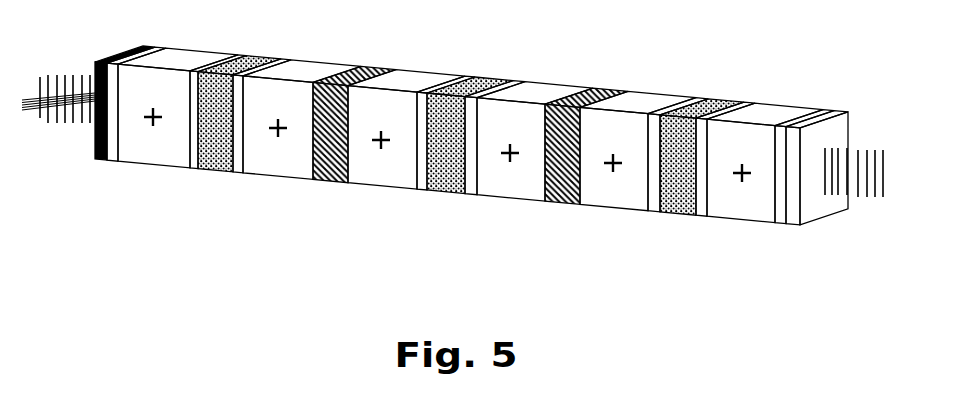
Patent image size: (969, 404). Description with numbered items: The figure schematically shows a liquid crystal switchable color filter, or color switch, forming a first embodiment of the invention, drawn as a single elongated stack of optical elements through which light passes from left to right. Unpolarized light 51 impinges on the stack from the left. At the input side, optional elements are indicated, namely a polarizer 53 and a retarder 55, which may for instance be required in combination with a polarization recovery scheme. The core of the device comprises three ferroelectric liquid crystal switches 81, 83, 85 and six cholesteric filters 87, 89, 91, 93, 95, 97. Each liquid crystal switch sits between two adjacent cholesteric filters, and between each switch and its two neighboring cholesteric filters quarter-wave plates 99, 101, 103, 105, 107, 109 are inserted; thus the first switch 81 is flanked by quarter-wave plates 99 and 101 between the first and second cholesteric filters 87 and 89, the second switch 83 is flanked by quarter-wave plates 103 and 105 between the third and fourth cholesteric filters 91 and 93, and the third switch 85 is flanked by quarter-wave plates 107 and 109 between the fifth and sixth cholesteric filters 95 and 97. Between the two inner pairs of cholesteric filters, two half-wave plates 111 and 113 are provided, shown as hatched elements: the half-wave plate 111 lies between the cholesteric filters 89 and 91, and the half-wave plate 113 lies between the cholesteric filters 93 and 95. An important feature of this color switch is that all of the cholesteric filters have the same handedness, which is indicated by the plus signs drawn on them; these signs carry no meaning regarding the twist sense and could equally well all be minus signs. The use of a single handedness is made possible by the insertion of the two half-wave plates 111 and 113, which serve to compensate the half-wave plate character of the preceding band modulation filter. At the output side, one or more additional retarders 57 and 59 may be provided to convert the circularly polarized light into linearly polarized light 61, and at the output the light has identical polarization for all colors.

The unpolarized light 51 is at (58, 111).
The polarizer 53 is at (102, 161).
The retarder 55 is at (113, 162).
The retarder 57 is at (782, 229).
The retarder 59 is at (790, 227).
The linearly polarized light 61 is at (856, 189).
The ferroelectric liquid crystal switch 81 is at (223, 173).
The ferroelectric liquid crystal switch 83 is at (452, 193).
The ferroelectric liquid crystal switch 85 is at (682, 219).
The cholesteric filter 87 is at (160, 165).
The cholesteric filter 89 is at (285, 181).
The cholesteric filter 91 is at (388, 189).
The cholesteric filter 93 is at (515, 199).
The cholesteric filter 95 is at (613, 209).
The cholesteric filter 97 is at (748, 223).
The quarter-wave plate 99 is at (193, 170).
The quarter-wave plate 101 is at (238, 175).
The quarter-wave plate 103 is at (426, 190).
The quarter-wave plate 105 is at (470, 195).
The quarter-wave plate 107 is at (655, 214).
The quarter-wave plate 109 is at (703, 219).
The half-wave plate 111 is at (377, 72).
The half-wave plate 113 is at (610, 93).